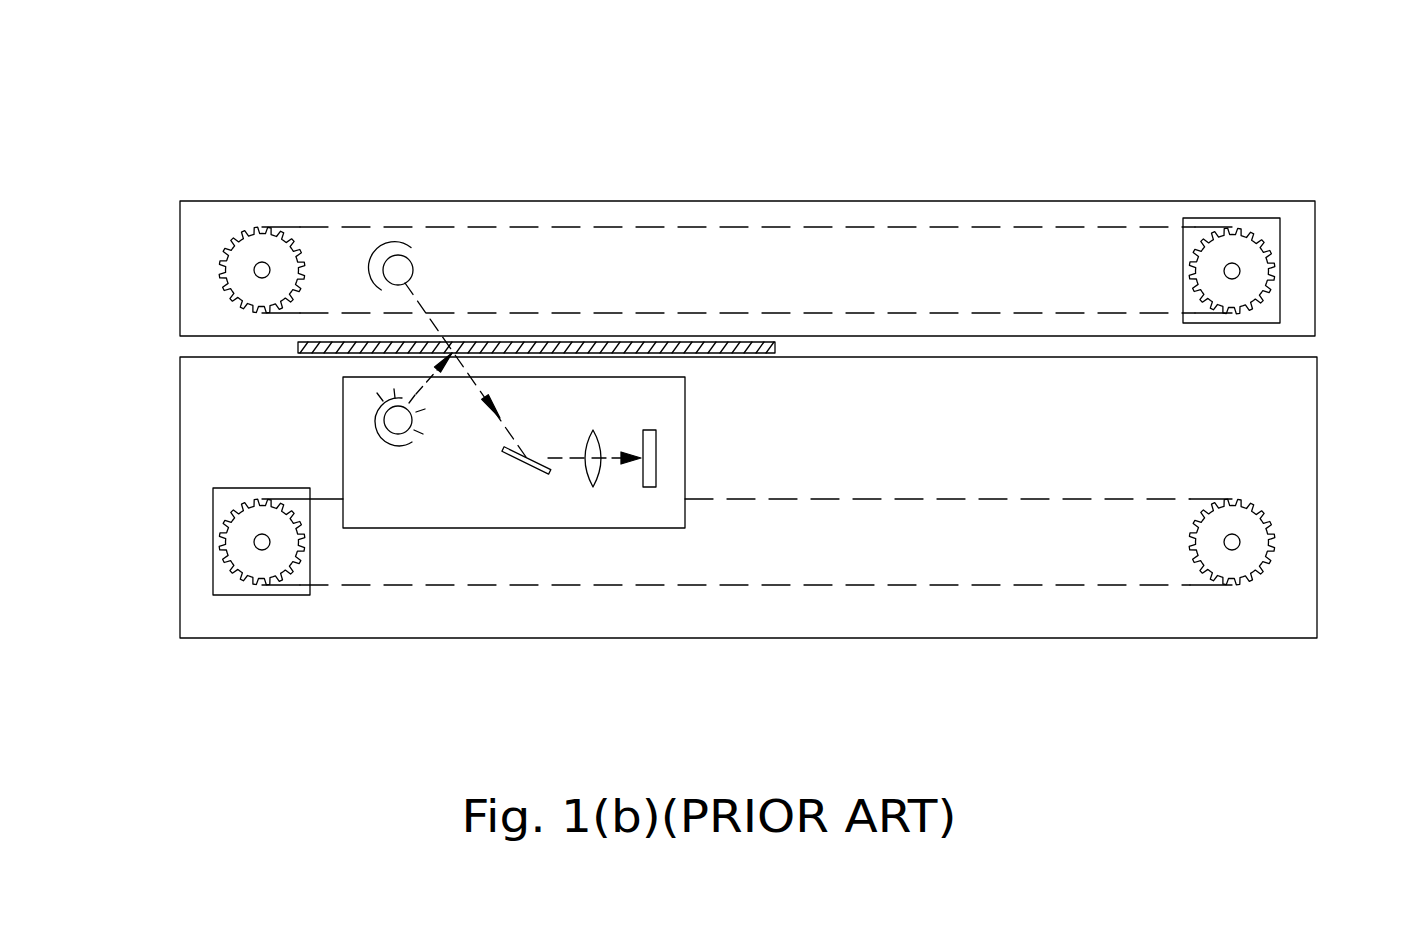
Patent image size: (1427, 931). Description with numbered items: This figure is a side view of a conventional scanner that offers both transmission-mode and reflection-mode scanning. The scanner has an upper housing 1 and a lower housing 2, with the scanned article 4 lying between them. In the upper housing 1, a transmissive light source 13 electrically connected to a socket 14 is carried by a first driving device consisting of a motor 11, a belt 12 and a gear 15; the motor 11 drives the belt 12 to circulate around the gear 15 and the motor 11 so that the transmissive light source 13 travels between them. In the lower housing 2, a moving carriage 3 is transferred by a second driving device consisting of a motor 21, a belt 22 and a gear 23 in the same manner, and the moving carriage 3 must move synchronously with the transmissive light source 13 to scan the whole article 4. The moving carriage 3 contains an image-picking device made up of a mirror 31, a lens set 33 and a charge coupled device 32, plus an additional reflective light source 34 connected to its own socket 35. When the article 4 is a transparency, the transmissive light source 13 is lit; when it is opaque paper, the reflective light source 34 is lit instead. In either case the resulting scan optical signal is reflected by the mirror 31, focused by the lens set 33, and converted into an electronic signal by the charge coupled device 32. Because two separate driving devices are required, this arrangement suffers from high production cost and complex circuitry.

The upper housing 1 is at (180, 245).
The lower housing 2 is at (1180, 640).
The moving carriage 3 is at (382, 518).
The scanned article 4 is at (298, 352).
The motor 11 is at (1222, 218).
The belt 12 is at (853, 227).
The transmissive light source 13 is at (418, 272).
The socket 14 is at (398, 245).
The gear 15 is at (275, 228).
The motor 21 is at (213, 535).
The belt 22 is at (1043, 585).
The gear 23 is at (1275, 540).
The mirror 31 is at (505, 452).
The charge coupled device 32 is at (657, 450).
The lens set 33 is at (590, 470).
The reflective light source 34 is at (398, 420).
The socket 35 is at (391, 446).